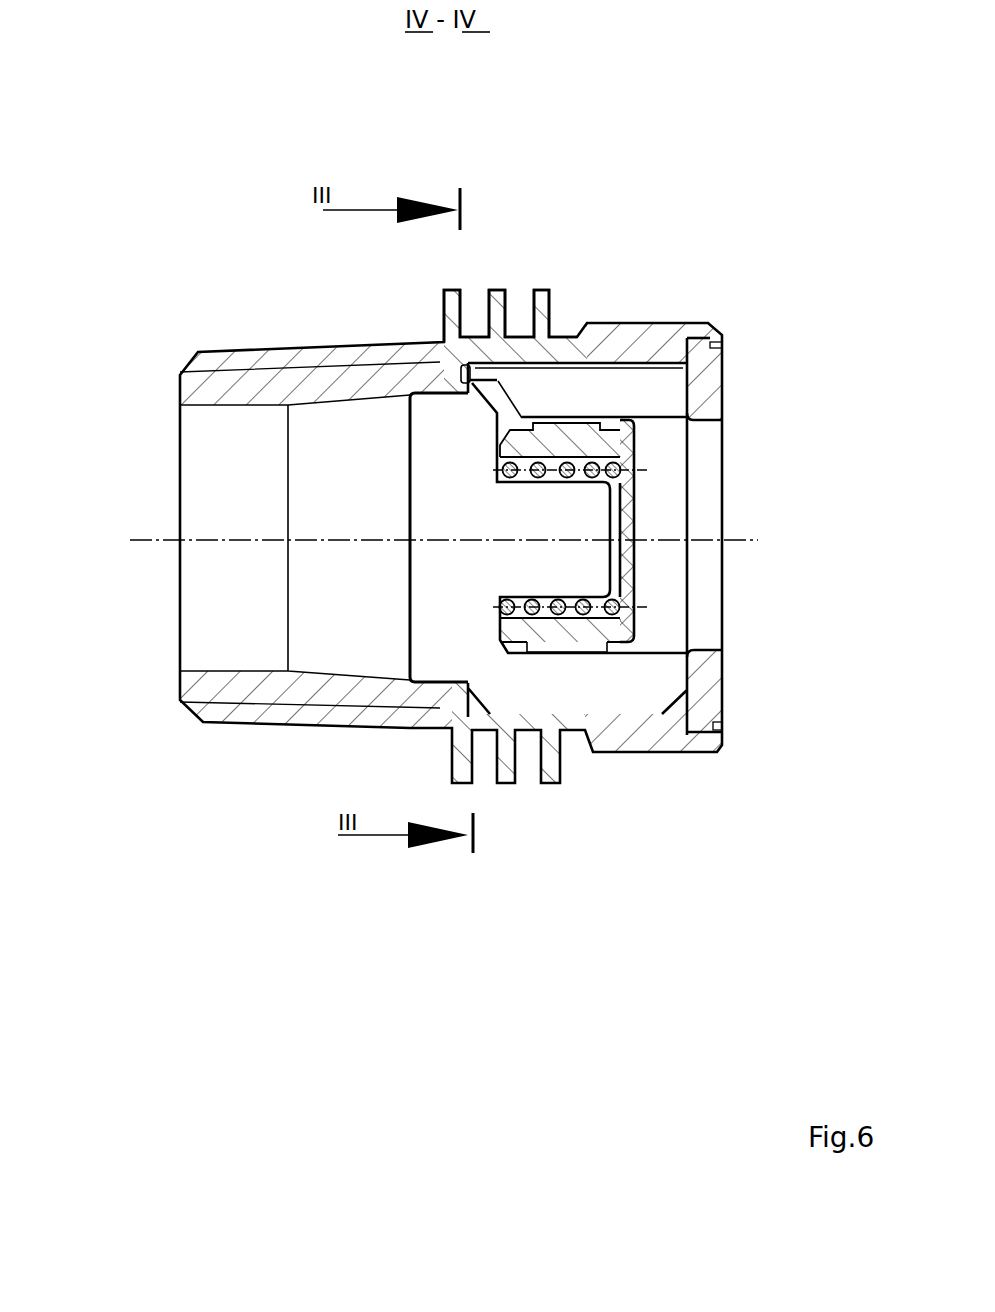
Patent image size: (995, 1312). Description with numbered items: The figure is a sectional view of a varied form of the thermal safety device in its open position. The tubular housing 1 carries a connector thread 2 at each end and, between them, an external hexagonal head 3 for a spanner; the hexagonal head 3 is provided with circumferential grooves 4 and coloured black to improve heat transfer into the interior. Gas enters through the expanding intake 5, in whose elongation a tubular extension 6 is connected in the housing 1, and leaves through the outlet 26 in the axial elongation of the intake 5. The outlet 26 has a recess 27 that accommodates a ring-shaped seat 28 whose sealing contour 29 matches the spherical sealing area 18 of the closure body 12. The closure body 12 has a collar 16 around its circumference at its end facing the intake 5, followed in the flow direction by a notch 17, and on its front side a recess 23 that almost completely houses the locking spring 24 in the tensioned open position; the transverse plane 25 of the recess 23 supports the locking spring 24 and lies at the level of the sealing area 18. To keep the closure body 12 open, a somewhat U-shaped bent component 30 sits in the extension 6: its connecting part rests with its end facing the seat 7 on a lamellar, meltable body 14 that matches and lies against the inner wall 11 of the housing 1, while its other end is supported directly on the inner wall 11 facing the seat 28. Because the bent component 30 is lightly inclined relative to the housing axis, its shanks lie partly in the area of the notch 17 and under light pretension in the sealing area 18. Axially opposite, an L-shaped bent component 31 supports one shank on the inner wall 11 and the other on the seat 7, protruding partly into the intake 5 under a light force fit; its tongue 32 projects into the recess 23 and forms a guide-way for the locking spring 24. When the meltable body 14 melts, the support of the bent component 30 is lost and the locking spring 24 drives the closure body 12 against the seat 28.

The housing 1 is at (437, 372).
The connector thread 2 is at (200, 365).
The hexagonal head 3 is at (495, 300).
The cooling fins 4 is at (518, 297).
The intake 5 is at (207, 636).
The extension 6 is at (672, 523).
The seat 7 is at (464, 368).
The inner wall 11 is at (565, 361).
The closure body 12 is at (652, 547).
The meltable body 14 is at (466, 364).
The collar 16 is at (518, 645).
The notch 17 is at (563, 632).
The sealing area 18 is at (722, 745).
The recess 23 is at (712, 332).
The locking spring 24 is at (626, 466).
The transverse plane 25 is at (618, 465).
The outlet 26 is at (705, 587).
The recess 27 is at (725, 732).
The ring-shaped seat 28 is at (715, 677).
The sealing contour 29 is at (705, 650).
The U-shaped bent component 30 is at (583, 387).
The L-shaped bent component 31 is at (462, 465).
The tongue 32 is at (548, 512).